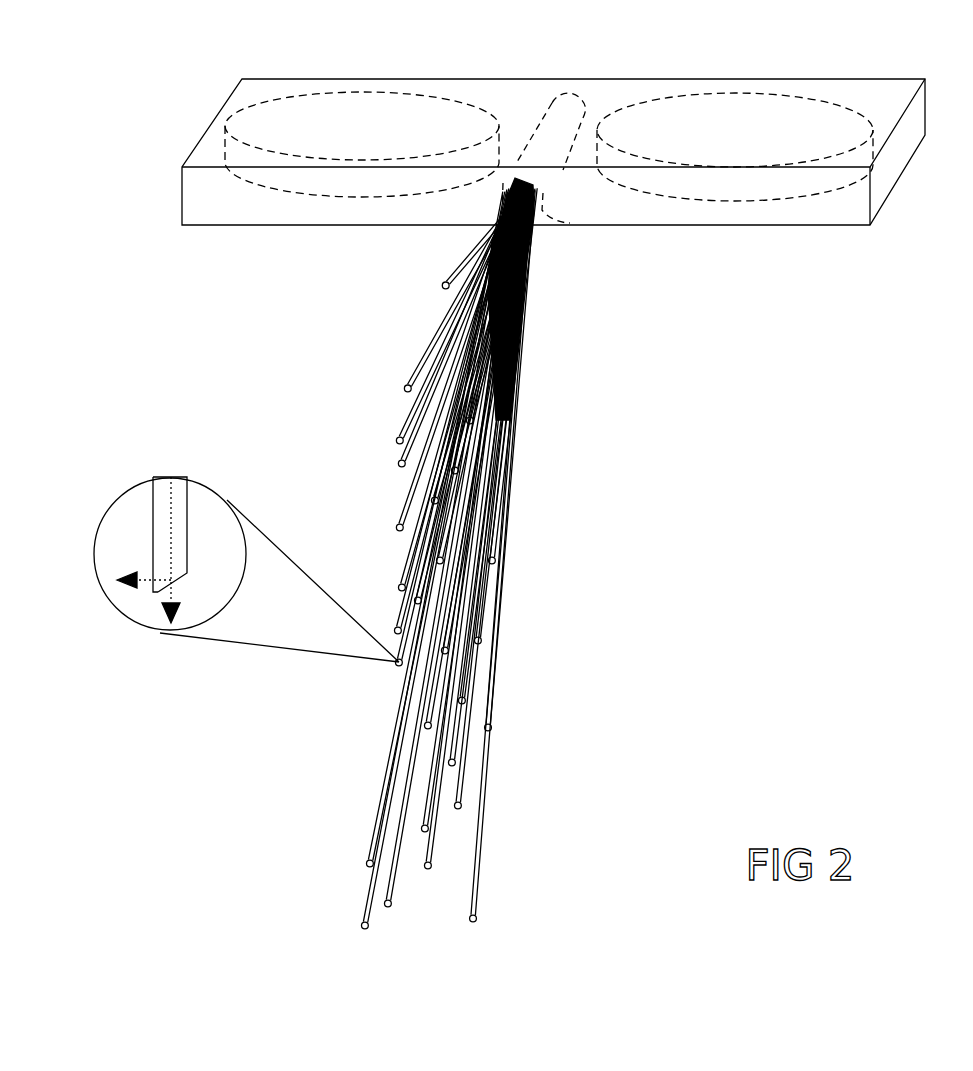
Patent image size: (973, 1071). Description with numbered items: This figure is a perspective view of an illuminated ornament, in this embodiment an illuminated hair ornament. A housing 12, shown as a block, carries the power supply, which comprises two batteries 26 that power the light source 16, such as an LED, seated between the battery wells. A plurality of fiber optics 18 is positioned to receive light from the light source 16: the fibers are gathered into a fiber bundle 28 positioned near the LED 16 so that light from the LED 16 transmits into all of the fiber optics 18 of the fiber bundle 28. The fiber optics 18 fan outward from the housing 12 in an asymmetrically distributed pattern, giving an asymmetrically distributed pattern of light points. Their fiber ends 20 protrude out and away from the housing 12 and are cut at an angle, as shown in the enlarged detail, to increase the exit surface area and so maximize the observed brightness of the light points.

The housing 12 is at (703, 227).
The light source 16 is at (590, 108).
The fiber optics 18 is at (187, 520).
The fiber ends 20 is at (152, 630).
The batteries 26 is at (805, 200).
The fiber bundle 28 is at (533, 223).